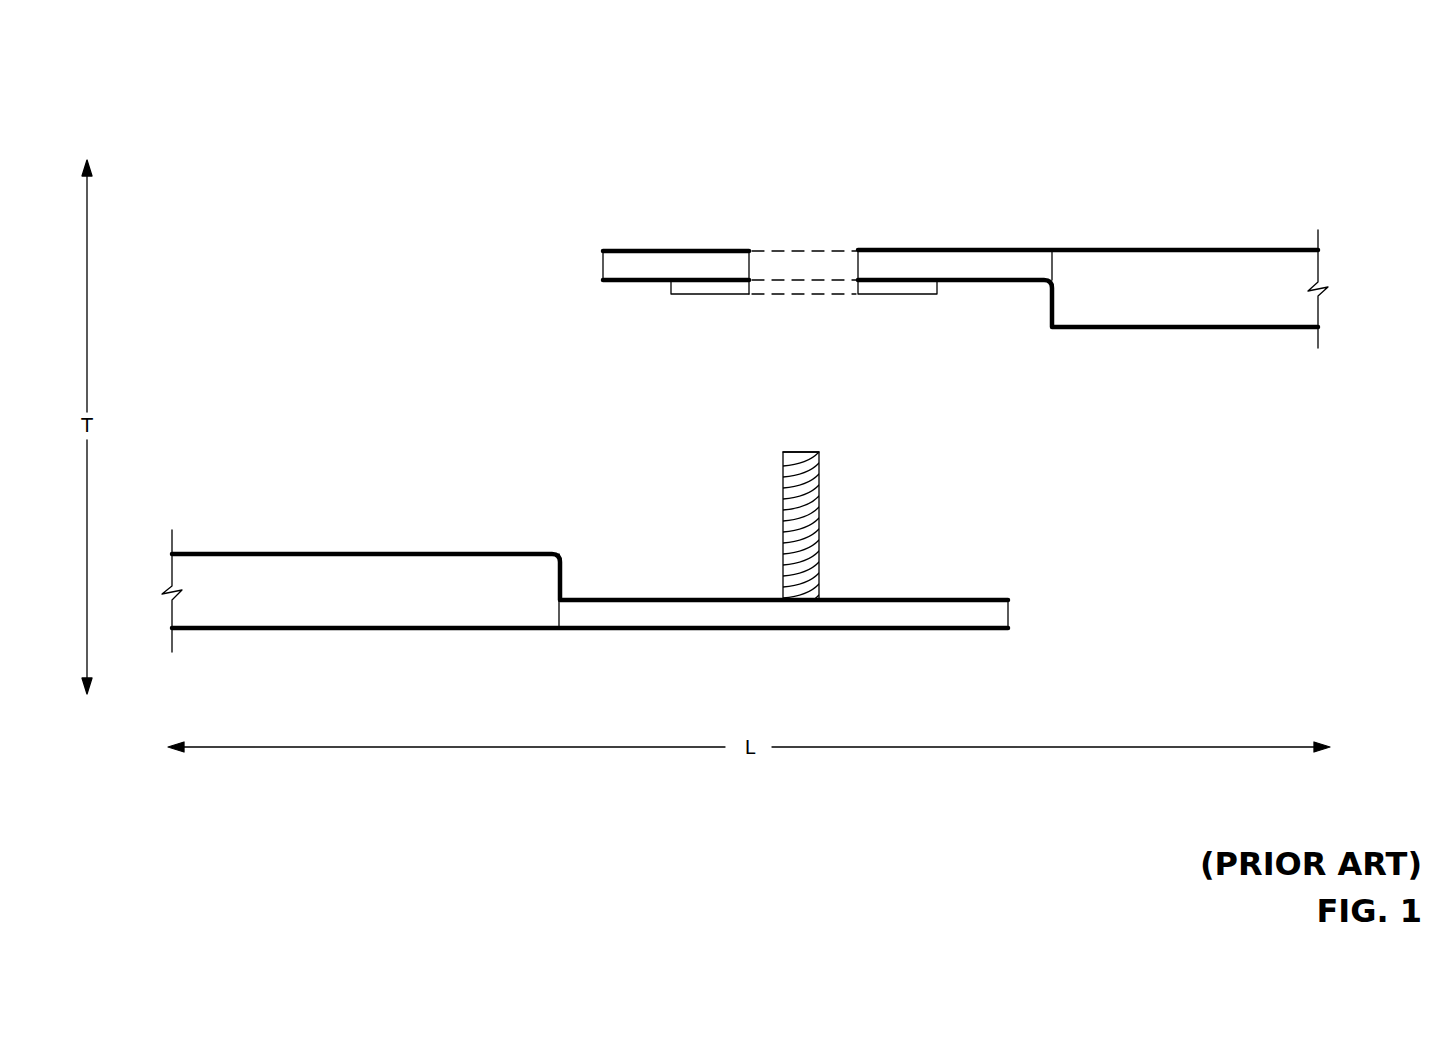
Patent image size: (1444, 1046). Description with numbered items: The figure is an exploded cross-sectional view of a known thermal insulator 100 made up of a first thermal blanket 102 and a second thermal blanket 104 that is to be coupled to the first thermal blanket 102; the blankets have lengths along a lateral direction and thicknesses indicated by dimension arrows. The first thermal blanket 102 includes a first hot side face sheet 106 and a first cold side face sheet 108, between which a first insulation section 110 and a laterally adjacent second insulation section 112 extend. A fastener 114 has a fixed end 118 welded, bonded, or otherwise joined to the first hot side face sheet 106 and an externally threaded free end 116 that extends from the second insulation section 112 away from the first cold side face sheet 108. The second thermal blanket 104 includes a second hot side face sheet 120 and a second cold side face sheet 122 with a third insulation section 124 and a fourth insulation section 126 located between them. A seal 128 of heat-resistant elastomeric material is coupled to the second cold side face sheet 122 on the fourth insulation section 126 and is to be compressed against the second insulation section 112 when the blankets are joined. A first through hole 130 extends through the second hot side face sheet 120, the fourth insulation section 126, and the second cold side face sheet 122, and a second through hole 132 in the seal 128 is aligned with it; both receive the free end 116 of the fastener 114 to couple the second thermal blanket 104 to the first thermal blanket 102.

The thermal insulator 100 is at (1199, 43).
The first thermal blanket 102 is at (254, 551).
The second thermal blanket 104 is at (1220, 248).
The first hot side face sheet 106 is at (359, 551).
The first cold side face sheet 108 is at (357, 630).
The first insulation section 110 is at (470, 585).
The second insulation section 112 is at (672, 612).
The fastener 114 is at (822, 528).
The free end 116 is at (803, 452).
The fixed end 118 is at (800, 598).
The second hot side face sheet 120 is at (1116, 248).
The second cold side face sheet 122 is at (1228, 328).
The third insulation section 124 is at (1125, 292).
The fourth insulation section 126 is at (957, 267).
The seal 128 is at (905, 290).
The first through hole 130 is at (858, 268).
The second through hole 132 is at (750, 284).